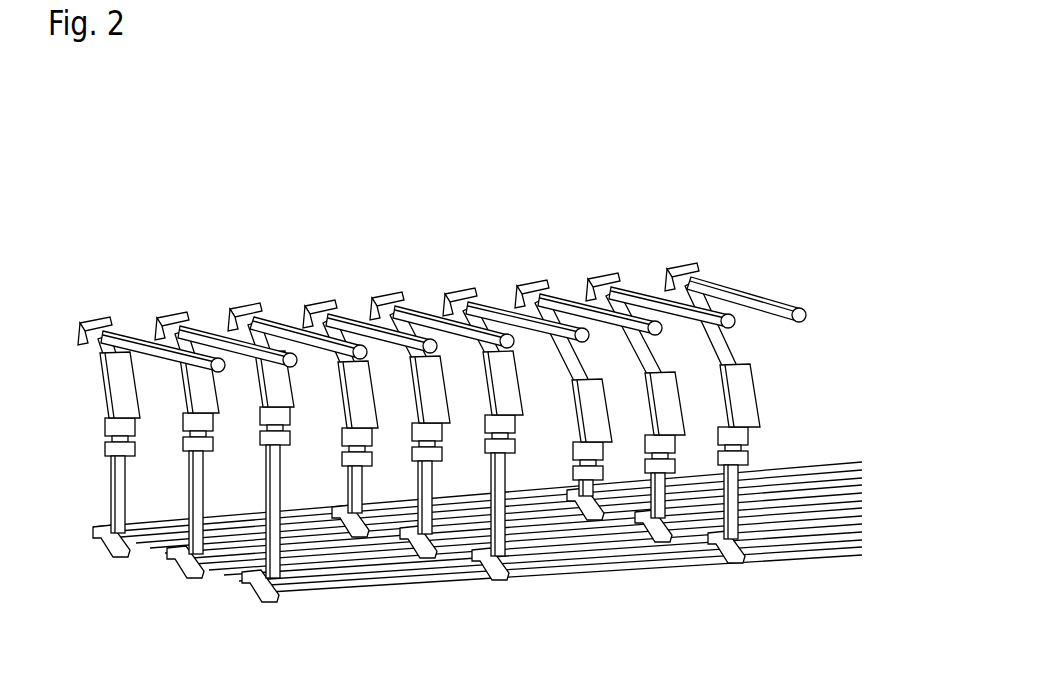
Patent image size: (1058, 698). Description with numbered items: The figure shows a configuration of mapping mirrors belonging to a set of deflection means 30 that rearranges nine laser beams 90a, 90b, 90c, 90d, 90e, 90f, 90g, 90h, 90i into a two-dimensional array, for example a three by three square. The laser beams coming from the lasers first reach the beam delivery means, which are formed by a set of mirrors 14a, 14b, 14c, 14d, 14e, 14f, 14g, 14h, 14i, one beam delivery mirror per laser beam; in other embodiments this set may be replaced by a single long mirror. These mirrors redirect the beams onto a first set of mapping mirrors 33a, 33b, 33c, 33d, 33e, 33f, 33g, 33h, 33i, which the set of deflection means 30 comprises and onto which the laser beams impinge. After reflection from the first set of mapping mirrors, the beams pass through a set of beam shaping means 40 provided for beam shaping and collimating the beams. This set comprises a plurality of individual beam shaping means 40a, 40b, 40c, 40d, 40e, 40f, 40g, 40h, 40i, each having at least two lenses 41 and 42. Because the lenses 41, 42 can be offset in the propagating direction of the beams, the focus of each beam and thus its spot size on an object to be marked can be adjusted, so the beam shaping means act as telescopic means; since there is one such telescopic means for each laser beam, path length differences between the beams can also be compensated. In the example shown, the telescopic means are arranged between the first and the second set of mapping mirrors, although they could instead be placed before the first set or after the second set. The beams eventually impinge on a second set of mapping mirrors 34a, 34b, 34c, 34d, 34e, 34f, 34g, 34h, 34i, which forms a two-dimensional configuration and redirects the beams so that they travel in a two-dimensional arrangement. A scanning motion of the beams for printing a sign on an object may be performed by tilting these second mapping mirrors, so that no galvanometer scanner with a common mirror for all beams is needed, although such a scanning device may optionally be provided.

The set of deflection means 30 is at (59, 361).
The beam delivery mirror 14a is at (97, 317).
The beam delivery mirror 14b is at (177, 312).
The beam delivery mirror 14c is at (240, 303).
The beam delivery mirror 14d is at (310, 300).
The beam delivery mirror 14e is at (382, 292).
The beam delivery mirror 14f is at (448, 288).
The beam delivery mirror 14g is at (520, 280).
The beam delivery mirror 14h is at (592, 275).
The beam delivery mirror 14i is at (670, 265).
The laser beam 90a is at (135, 333).
The laser beam 90b is at (213, 330).
The laser beam 90c is at (295, 325).
The laser beam 90d is at (350, 320).
The laser beam 90e is at (413, 315).
The laser beam 90f is at (490, 312).
The laser beam 90g is at (565, 305).
The laser beam 90h is at (640, 300).
The laser beam 90i is at (755, 297).
The first mapping mirror 33a is at (135, 402).
The first mapping mirror 33b is at (228, 394).
The first mapping mirror 33c is at (290, 400).
The first mapping mirror 33d is at (372, 405).
The first mapping mirror 33e is at (445, 398).
The first mapping mirror 33f is at (517, 393).
The first mapping mirror 33g is at (618, 375).
The first mapping mirror 33h is at (661, 392).
The first mapping mirror 33i is at (758, 395).
The set of beam shaping means 40 is at (755, 468).
The beam shaping means 40a is at (81, 452).
The beam shaping means 40b is at (178, 427).
The beam shaping means 40c is at (250, 430).
The beam shaping means 40d is at (338, 450).
The beam shaping means 40e is at (408, 448).
The beam shaping means 40f is at (482, 440).
The beam shaping means 40g is at (570, 455).
The beam shaping means 40h is at (638, 477).
The beam shaping means 40i is at (710, 469).
The lens 41 is at (104, 424).
The lens 42 is at (92, 423).
The second mapping mirror 34a is at (103, 548).
The second mapping mirror 34b is at (170, 570).
The second mapping mirror 34c is at (248, 595).
The second mapping mirror 34d is at (345, 537).
The second mapping mirror 34e is at (407, 557).
The second mapping mirror 34f is at (482, 578).
The second mapping mirror 34g is at (575, 518).
The second mapping mirror 34h is at (650, 541).
The second mapping mirror 34i is at (724, 563).